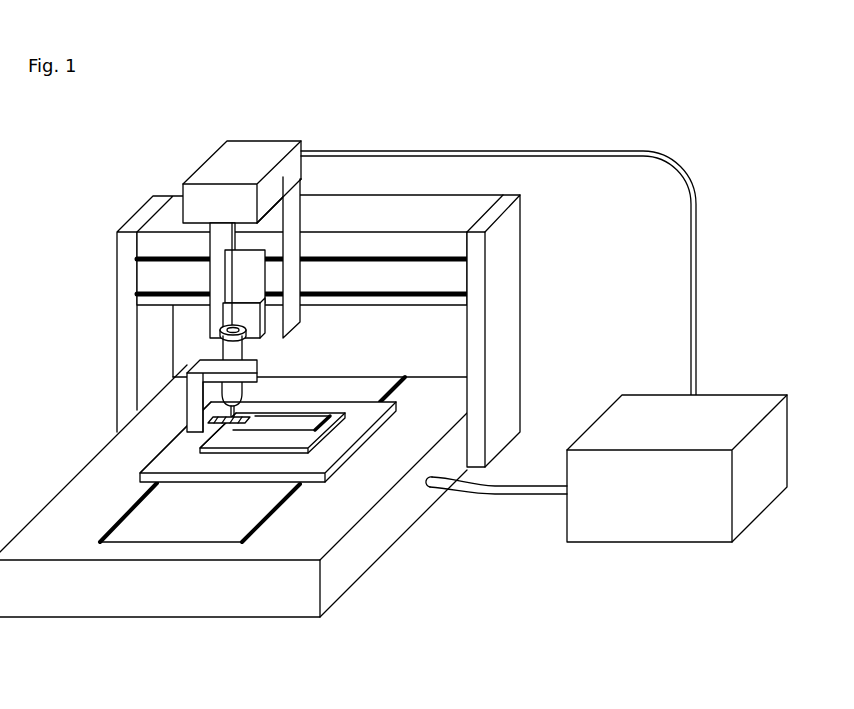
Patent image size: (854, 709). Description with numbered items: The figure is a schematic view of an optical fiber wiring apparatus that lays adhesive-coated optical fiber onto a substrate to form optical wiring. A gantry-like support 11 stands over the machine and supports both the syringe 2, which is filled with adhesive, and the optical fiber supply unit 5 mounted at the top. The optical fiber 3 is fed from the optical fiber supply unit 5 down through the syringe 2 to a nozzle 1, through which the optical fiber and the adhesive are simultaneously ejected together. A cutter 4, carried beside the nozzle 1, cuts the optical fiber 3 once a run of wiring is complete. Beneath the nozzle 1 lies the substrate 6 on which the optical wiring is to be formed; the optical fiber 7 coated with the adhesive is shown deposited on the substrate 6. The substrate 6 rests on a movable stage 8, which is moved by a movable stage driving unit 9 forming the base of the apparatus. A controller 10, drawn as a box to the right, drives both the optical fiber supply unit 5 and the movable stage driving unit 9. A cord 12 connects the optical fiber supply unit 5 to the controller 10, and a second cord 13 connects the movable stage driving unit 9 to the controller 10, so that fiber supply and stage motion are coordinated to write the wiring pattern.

The nozzle 1 is at (242, 411).
The syringe 2 is at (227, 350).
The optical fiber 3 is at (207, 225).
The cutter 4 is at (187, 398).
The optical fiber supply unit 5 is at (220, 155).
The substrate 6 is at (230, 450).
The optical fiber coated with the adhesive 7 is at (273, 430).
The movable stage 8 is at (185, 477).
The movable stage driving unit 9 is at (133, 533).
The controller 10 is at (723, 407).
The support 11 is at (396, 202).
The cord 12 is at (698, 215).
The cord 13 is at (504, 495).